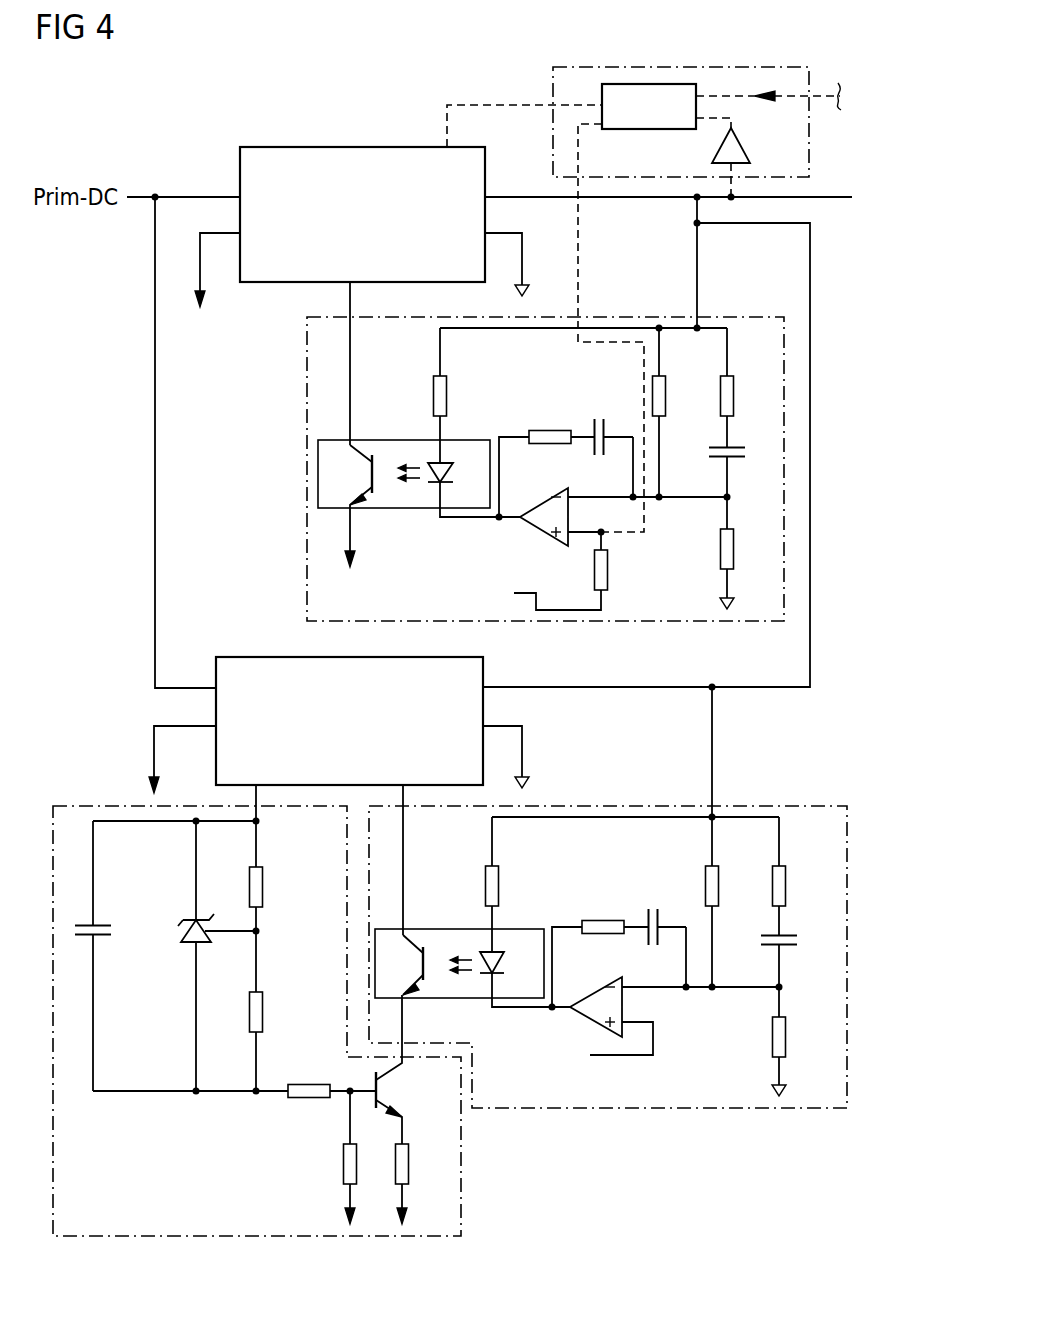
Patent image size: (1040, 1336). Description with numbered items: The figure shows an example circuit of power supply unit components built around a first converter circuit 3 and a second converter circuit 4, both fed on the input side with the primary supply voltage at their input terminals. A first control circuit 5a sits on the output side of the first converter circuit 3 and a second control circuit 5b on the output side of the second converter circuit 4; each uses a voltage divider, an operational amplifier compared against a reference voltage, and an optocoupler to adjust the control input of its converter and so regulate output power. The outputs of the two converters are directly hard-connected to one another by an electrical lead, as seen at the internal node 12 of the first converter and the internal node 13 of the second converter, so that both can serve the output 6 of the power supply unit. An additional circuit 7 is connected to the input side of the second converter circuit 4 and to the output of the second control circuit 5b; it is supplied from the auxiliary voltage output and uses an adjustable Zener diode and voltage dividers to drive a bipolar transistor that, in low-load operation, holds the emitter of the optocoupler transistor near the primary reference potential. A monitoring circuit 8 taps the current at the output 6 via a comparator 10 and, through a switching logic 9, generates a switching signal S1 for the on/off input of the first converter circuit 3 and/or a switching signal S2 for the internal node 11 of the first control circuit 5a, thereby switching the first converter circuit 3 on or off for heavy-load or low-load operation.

The first converter circuit 3 is at (363, 146).
The second converter circuit 4 is at (265, 655).
The first control circuit 5a is at (515, 469).
The second control circuit 5b is at (634, 805).
The output 6 is at (832, 195).
The additional circuit 7 is at (125, 805).
The monitoring circuit 8 is at (697, 104).
The switching logic 9 is at (650, 83).
The comparator for output current 10 is at (742, 145).
The internal node 11 is at (604, 537).
The internal node 12 is at (692, 200).
The internal node 13 is at (713, 682).
The switching signal S1 is at (494, 104).
The switching signal S2 is at (581, 256).